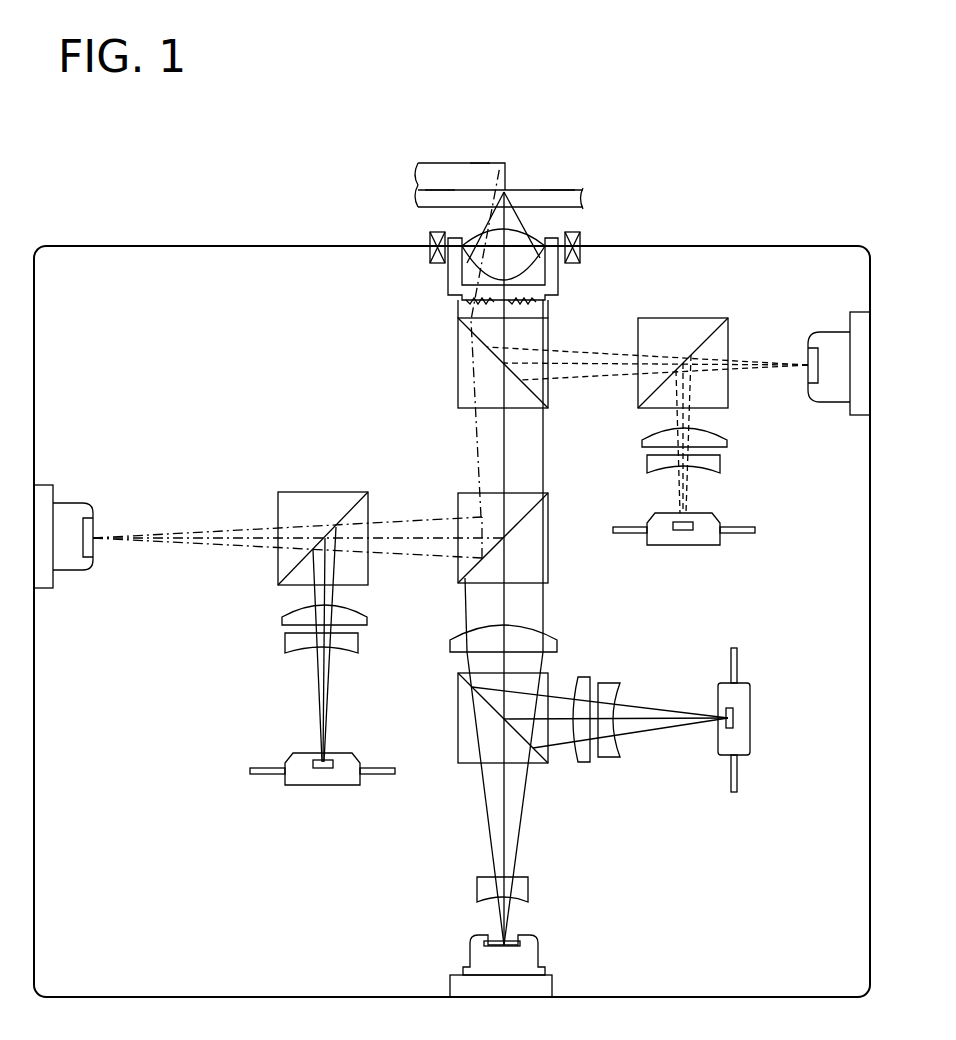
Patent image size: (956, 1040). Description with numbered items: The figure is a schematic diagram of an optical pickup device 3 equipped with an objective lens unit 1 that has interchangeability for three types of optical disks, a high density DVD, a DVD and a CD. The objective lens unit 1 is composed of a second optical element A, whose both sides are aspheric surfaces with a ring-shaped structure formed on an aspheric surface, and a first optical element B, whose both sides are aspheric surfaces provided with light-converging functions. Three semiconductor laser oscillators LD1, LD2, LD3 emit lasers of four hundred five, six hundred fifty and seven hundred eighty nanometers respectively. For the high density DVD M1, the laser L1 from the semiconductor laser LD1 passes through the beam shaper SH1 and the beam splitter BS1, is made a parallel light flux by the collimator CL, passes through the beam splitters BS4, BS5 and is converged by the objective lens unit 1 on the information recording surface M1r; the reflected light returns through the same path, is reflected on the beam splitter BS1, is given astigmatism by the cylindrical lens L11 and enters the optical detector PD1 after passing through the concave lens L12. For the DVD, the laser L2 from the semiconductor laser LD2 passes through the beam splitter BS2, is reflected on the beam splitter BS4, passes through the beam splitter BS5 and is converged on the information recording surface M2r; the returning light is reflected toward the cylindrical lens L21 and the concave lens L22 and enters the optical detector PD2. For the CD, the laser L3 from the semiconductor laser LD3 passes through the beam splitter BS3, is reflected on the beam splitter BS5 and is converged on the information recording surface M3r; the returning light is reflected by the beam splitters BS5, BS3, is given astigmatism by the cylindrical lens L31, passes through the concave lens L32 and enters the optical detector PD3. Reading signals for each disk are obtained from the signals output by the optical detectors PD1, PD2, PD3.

The objective lens unit 1 is at (471, 273).
The optical pickup device 3 is at (752, 222).
The second optical element A is at (460, 297).
The first optical element B is at (487, 267).
The high density DVD M1 is at (583, 203).
The information recording surface of high density DVD M1r is at (557, 196).
The information recording surface of DVD M2r is at (438, 188).
The information recording surface of CD M3r is at (477, 165).
The beam splitter BS1 is at (465, 767).
The beam splitter BS2 is at (323, 492).
The beam splitter BS3 is at (680, 318).
The beam splitter BS4 is at (550, 568).
The beam splitter BS5 is at (456, 362).
The laser L1 is at (520, 825).
The laser L2 is at (412, 524).
The laser L3 is at (578, 372).
The cylindrical lens L11 is at (583, 677).
The concave lens L12 is at (610, 683).
The cylindrical lens L21 is at (282, 620).
The concave lens L22 is at (285, 640).
The cylindrical lens L31 is at (713, 440).
The concave lens L32 is at (715, 463).
The collimator CL is at (450, 640).
The beam shaper SH1 is at (523, 892).
The semiconductor laser oscillator LD1 is at (527, 955).
The semiconductor laser oscillator LD2 is at (70, 513).
The semiconductor laser oscillator LD3 is at (828, 387).
The optical detector PD1 is at (745, 693).
The optical detector PD2 is at (298, 780).
The optical detector PD3 is at (703, 540).